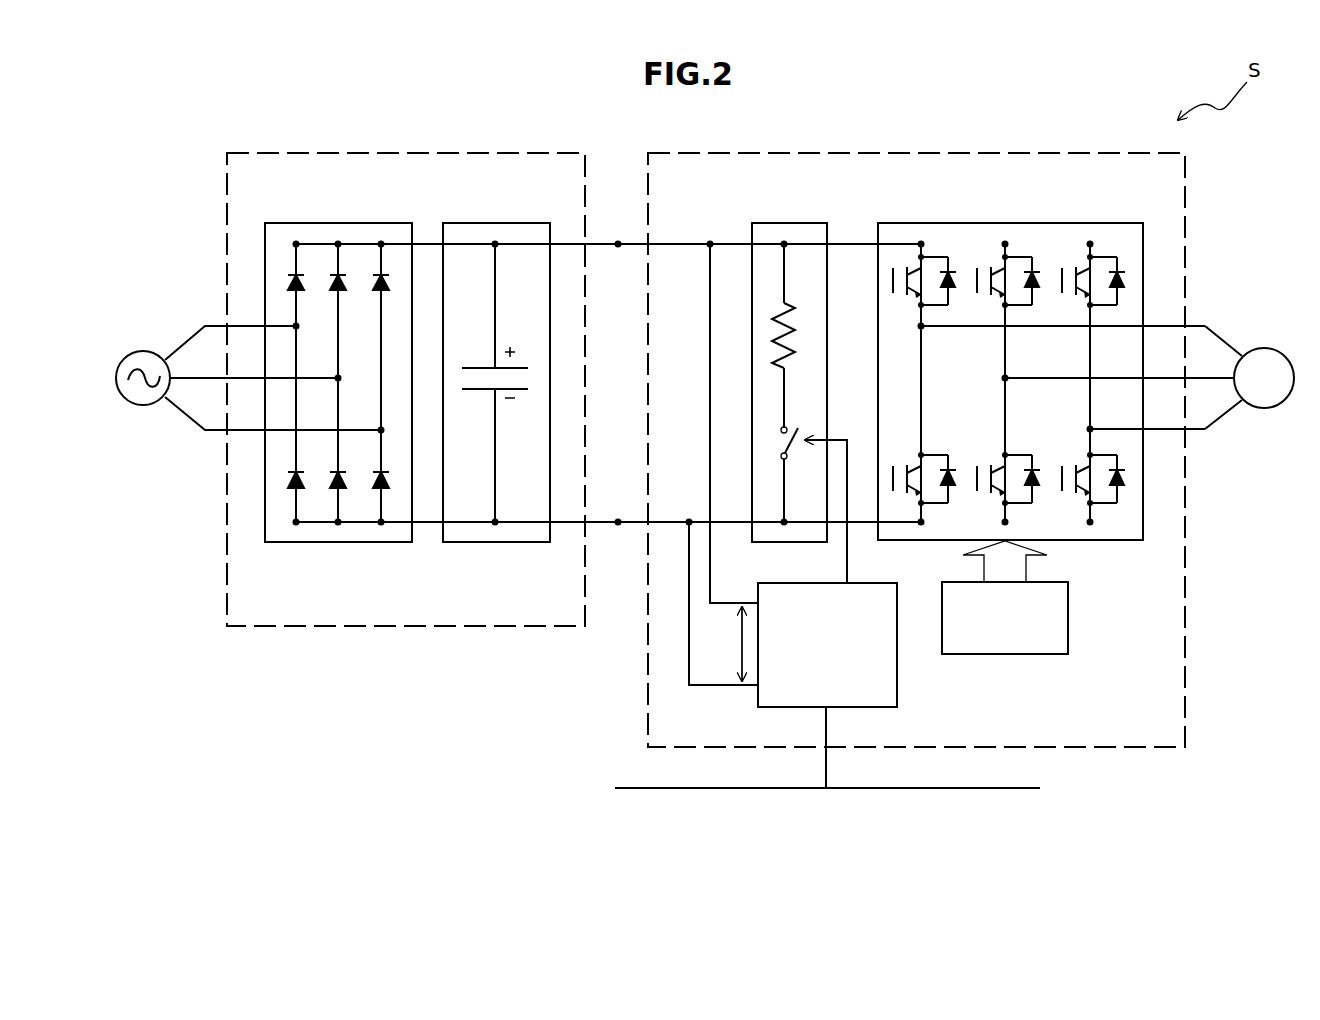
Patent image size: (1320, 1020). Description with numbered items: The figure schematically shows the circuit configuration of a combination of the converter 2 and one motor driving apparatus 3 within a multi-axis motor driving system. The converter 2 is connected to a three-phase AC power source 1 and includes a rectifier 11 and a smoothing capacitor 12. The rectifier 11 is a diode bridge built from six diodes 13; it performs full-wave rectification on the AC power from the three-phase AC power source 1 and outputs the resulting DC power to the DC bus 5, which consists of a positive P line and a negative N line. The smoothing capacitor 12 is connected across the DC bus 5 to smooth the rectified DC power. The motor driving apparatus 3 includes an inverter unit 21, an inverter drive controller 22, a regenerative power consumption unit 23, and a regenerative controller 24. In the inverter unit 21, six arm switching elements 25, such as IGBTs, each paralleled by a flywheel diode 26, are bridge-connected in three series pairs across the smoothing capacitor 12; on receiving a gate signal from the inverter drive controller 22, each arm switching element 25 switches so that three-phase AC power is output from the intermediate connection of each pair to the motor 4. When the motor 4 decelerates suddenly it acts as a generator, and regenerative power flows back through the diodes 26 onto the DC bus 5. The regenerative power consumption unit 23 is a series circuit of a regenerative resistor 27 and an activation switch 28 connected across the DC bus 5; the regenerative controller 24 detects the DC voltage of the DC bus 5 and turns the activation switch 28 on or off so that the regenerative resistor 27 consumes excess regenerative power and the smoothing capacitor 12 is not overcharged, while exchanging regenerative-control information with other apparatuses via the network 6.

The three-phase AC power source 1 is at (130, 348).
The converter 2 is at (408, 152).
The motor driving apparatus 3 is at (990, 152).
The motor 4 is at (1262, 348).
The DC bus 5 is at (600, 246).
The network 6 is at (675, 790).
The rectifier 11 is at (333, 542).
The smoothing capacitor 12 is at (484, 542).
The diode 13 is at (292, 488).
The inverter unit 21 is at (1050, 355).
The inverter drive controller 22 is at (1068, 612).
The regenerative power consumption unit 23 is at (784, 223).
The regenerative controller 24 is at (897, 690).
The arm switching element 25 is at (892, 283).
The diode 26 is at (950, 282).
The regenerative resistor 27 is at (796, 325).
The activation switch 28 is at (800, 430).